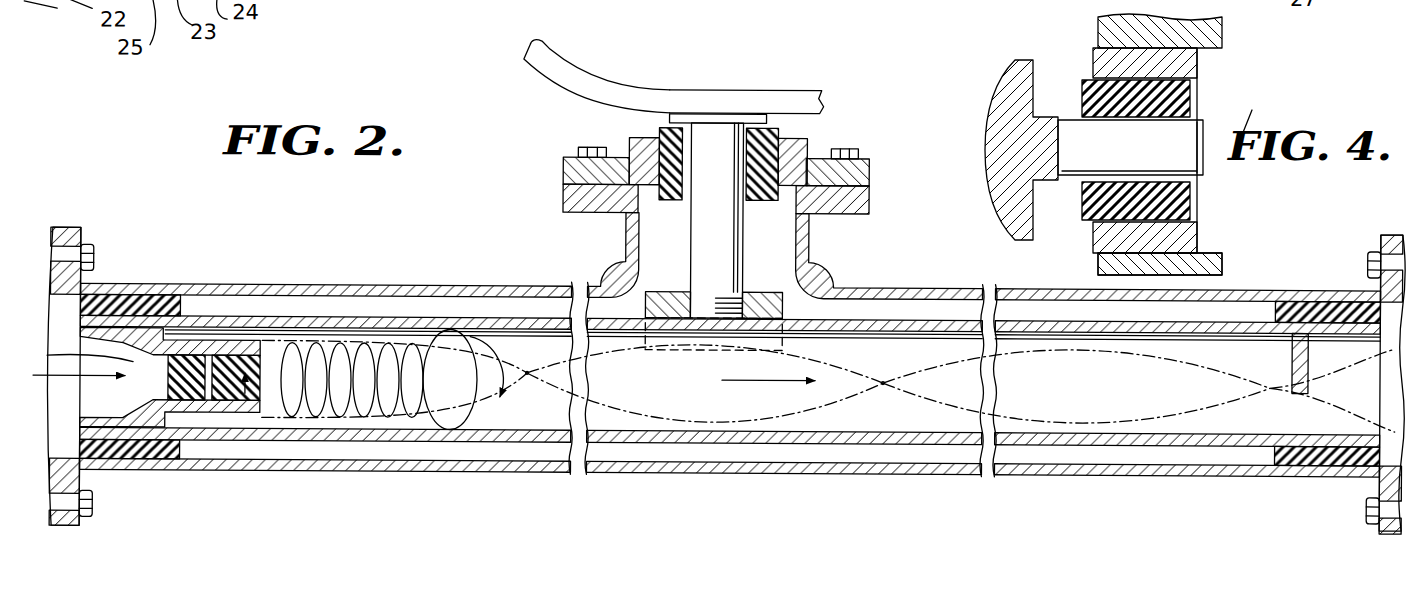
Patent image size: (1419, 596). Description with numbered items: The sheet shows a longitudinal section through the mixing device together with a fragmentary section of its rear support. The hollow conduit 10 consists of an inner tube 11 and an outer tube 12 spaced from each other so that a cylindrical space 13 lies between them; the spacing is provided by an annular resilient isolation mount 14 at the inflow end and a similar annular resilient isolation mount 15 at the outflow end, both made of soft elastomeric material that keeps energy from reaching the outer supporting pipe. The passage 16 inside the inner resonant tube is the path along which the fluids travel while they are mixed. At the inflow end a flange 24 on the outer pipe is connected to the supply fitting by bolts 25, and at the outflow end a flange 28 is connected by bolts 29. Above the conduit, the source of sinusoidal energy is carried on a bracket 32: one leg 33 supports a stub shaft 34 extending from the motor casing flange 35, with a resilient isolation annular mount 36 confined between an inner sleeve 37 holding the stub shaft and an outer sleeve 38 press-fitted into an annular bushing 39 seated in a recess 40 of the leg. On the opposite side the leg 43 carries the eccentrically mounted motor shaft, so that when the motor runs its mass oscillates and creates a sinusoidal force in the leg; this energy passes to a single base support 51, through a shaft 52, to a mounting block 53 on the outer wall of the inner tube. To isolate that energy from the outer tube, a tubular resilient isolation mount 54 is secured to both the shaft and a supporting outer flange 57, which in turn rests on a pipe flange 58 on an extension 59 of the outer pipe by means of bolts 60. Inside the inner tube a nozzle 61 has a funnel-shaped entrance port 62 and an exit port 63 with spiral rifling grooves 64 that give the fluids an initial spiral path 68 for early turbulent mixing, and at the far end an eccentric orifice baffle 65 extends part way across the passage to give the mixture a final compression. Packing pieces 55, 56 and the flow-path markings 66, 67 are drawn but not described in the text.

In FIG. 2, the hollow conduit 10 is at (303, 270).
In FIG. 2, the inner tube 11 is at (356, 330).
In FIG. 2, the outer tube 12 is at (503, 292).
In FIG. 2, the cylindrical space 13 is at (910, 310).
In FIG. 2, the annular resilient isolation mount 14 is at (169, 306).
In FIG. 2, the annular resilient isolation mount 15 is at (1311, 306).
In FIG. 2, the passage 16 is at (516, 422).
In FIG. 2, the flange 24 is at (63, 232).
In FIG. 2, the bolts 25 is at (92, 246).
In FIG. 2, the flange 28 is at (1391, 238).
In FIG. 2, the bolts 29 is at (1366, 254).
In FIG. 2, the bracket 32 is at (801, 98).
In FIG. 4, the leg 33 is at (1110, 30).
In FIG. 4, the stub shaft 34 is at (1130, 147).
In FIG. 4, the motor casing flange 35 is at (1024, 77).
In FIG. 4, the resilient isolation annular mount 36 is at (1165, 101).
In FIG. 4, the inner sleeve 37 is at (1153, 197).
In FIG. 4, the outer sleeve 38 is at (1158, 221).
In FIG. 4, the annular bushing 39 is at (1187, 58).
In FIG. 4, the recess 40 is at (1127, 248).
In FIG. 2, the leg 43 is at (533, 66).
In FIG. 2, the base support 51 is at (675, 114).
In FIG. 2, the shaft 52 is at (720, 241).
In FIG. 2, the mounting block 53 is at (751, 296).
In FIG. 2, the tubular resilient isolation mount 54 is at (767, 136).
In FIG. 2, the right packing 55 is at (748, 160).
In FIG. 2, the left packing 56 is at (643, 148).
In FIG. 2, the outer flange 57 is at (567, 173).
In FIG. 2, the pipe flange 58 is at (570, 200).
In FIG. 2, the extension 59 is at (627, 238).
In FIG. 2, the bolts 60 is at (581, 148).
In FIG. 2, the nozzle 61 is at (148, 333).
In FIG. 2, the funnel-shaped entrance port 62 is at (76, 359).
In FIG. 2, the exit port 63 is at (215, 368).
In FIG. 2, the spiral rifling grooves 64 is at (218, 404).
In FIG. 2, the eccentric orifice baffle 65 is at (1293, 392).
In FIG. 2, the flow crossing node 66 is at (529, 376).
In FIG. 2, the helical flow path 67 is at (690, 426).
In FIG. 2, the initial spiral path 68 is at (357, 416).